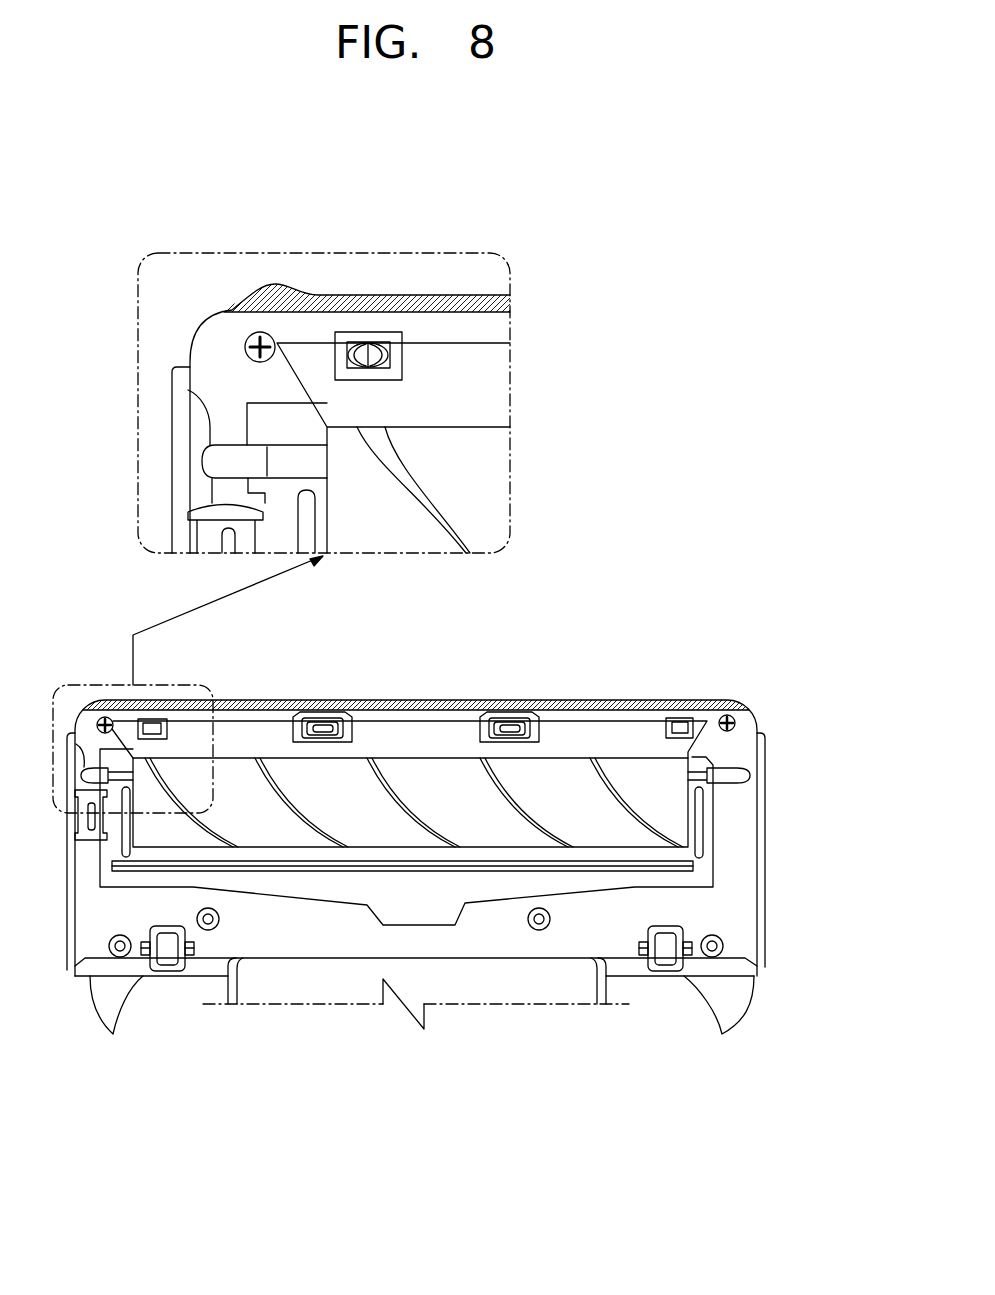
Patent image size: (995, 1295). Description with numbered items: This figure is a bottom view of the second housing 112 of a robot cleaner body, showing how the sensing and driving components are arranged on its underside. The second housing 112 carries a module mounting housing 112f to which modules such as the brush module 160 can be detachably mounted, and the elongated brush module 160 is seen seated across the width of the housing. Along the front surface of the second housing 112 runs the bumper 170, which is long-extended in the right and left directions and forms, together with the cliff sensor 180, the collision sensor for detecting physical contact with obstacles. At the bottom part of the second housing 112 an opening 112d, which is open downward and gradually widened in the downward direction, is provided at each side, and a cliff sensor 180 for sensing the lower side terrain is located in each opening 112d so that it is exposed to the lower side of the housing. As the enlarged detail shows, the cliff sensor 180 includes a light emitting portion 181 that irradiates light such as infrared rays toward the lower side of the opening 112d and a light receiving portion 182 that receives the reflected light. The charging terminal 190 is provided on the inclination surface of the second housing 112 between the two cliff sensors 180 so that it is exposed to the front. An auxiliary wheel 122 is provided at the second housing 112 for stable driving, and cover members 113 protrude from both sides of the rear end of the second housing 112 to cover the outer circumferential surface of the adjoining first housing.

The second housing 112 is at (733, 912).
The opening 112d is at (168, 728).
The module mounting housing 112f is at (707, 870).
The cover member 113 is at (728, 1006).
The auxiliary wheel 122 is at (664, 971).
The brush module 160 is at (678, 823).
The bumper 170 is at (563, 707).
The cliff sensor 180 is at (150, 727).
The light emitting portion 181 is at (355, 343).
The light receiving portion 182 is at (382, 342).
The charging terminal 190 is at (505, 728).